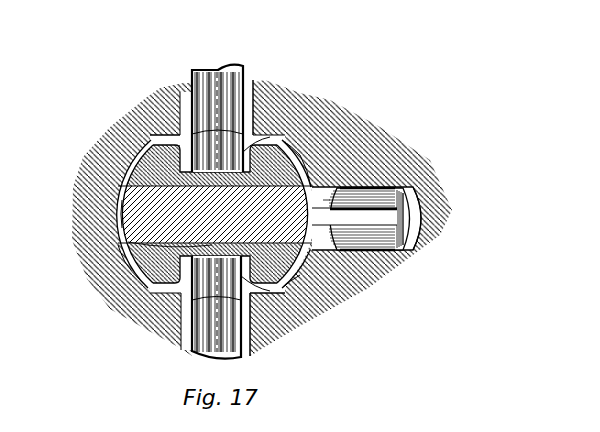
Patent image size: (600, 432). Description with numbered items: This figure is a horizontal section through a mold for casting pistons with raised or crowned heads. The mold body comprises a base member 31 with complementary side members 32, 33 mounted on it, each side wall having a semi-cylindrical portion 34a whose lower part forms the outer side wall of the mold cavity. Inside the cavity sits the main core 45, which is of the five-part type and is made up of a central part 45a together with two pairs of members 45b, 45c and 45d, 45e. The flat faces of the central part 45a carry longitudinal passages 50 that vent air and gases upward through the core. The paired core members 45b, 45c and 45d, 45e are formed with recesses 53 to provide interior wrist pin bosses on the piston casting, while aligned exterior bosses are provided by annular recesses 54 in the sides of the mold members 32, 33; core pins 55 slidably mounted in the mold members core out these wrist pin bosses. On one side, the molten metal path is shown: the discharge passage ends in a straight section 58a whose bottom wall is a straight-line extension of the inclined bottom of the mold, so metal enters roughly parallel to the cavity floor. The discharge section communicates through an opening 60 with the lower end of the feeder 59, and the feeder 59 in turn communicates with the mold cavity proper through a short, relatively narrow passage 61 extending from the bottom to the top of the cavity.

The base member 31 is at (300, 283).
The side member 32 is at (318, 110).
The side member 33 is at (107, 309).
The semi-cylindrical portion 34a is at (95, 263).
The main core 45 is at (312, 256).
The central core part 45a is at (140, 228).
The core member 45b is at (103, 283).
The core member 45c is at (290, 300).
The core member 45d is at (151, 148).
The core member 45e is at (305, 152).
The longitudinal passage 50 is at (123, 188).
The recess 53 is at (250, 157).
The annular recess 54 is at (252, 127).
The core pin 55 is at (208, 68).
The straight section 58a is at (400, 202).
The feeder 59 is at (405, 186).
The opening 60 is at (363, 203).
The passage 61 is at (323, 200).